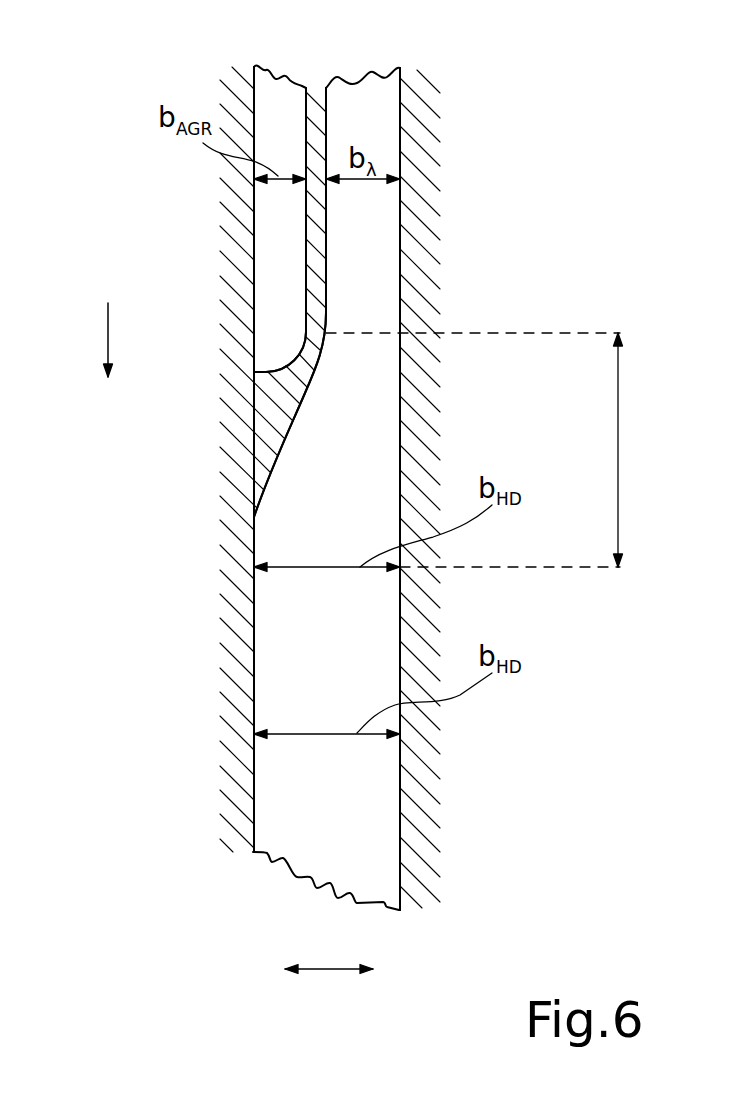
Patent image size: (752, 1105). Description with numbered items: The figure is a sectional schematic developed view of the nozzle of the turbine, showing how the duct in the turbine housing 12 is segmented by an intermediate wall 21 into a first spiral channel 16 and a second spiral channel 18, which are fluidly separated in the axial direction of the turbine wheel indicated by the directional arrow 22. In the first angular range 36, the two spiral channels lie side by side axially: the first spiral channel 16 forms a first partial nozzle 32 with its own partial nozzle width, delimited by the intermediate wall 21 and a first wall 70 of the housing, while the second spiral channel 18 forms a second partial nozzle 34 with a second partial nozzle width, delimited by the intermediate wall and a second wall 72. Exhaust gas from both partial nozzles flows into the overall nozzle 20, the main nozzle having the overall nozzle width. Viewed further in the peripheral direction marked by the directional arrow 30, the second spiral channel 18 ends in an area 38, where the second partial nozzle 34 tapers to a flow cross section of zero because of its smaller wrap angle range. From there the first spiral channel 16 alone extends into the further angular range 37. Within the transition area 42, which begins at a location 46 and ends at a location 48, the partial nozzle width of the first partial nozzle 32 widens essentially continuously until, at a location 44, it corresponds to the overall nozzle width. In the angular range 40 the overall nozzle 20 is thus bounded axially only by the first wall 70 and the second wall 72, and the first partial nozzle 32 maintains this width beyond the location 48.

The turbine housing 12 is at (400, 260).
The first spiral channel 16 is at (377, 133).
The second spiral channel 18 is at (292, 133).
The overall nozzle 20 is at (355, 657).
The intermediate wall 21 is at (313, 107).
The directional arrow 22 is at (328, 970).
The directional arrow 30 is at (108, 335).
The first partial nozzle 32 is at (373, 300).
The second partial nozzle 34 is at (280, 260).
The first angular range 36 is at (470, 168).
The further angular range 37 is at (517, 727).
The area 38 is at (280, 353).
The angular range 40 is at (480, 432).
The transition area 42 is at (618, 427).
The location 44 is at (233, 543).
The location 46 is at (597, 327).
The location 48 is at (580, 583).
The first wall 70 is at (400, 147).
The second wall 72 is at (254, 118).